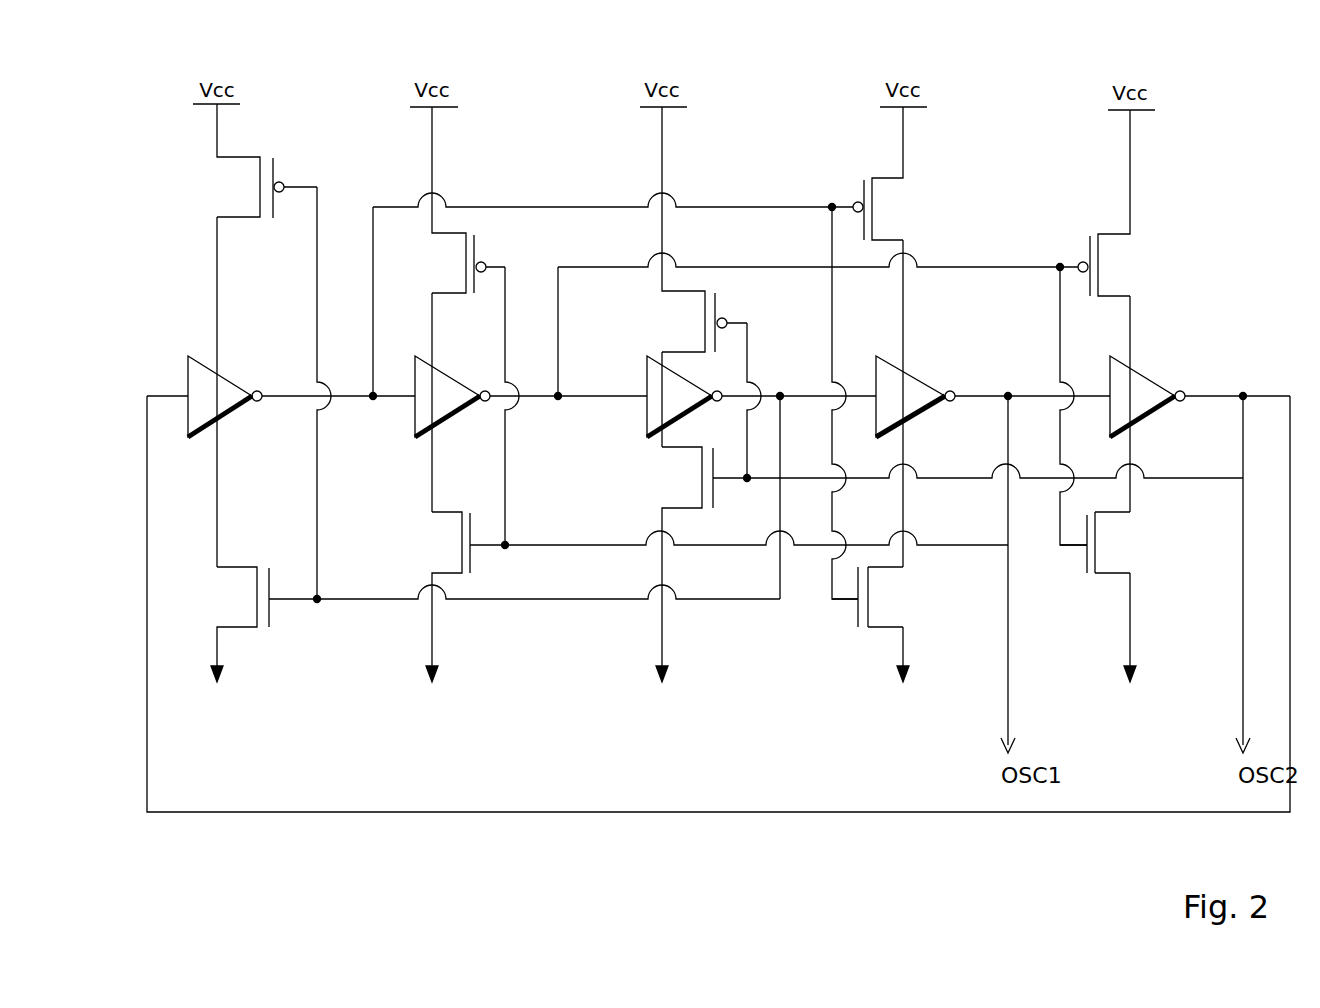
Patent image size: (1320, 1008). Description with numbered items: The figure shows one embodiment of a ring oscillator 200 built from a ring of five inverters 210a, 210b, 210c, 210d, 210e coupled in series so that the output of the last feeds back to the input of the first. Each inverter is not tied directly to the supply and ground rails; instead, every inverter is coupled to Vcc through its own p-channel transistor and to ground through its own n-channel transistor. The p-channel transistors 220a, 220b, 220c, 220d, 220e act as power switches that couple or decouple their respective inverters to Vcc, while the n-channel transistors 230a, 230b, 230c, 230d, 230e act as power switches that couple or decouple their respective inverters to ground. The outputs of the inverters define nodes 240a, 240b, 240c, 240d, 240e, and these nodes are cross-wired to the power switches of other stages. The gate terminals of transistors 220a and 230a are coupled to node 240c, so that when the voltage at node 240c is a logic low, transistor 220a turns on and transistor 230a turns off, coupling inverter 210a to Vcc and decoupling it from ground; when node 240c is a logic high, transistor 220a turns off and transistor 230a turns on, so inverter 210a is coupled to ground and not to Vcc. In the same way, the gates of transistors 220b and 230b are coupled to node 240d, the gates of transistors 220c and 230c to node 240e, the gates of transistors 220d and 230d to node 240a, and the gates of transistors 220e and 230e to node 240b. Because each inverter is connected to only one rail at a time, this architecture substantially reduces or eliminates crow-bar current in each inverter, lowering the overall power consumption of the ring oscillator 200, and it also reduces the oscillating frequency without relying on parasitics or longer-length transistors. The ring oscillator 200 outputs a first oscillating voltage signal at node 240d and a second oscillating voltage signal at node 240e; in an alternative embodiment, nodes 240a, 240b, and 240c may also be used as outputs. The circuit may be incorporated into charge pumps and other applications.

The ring oscillator 200 is at (1250, 120).
The inverter 210a is at (232, 406).
The inverter 210b is at (459, 406).
The inverter 210c is at (692, 406).
The inverter 210d is at (922, 406).
The inverter 210e is at (1155, 406).
The p-channel transistor 220a is at (255, 161).
The p-channel transistor 220b is at (455, 200).
The p-channel transistor 220c is at (693, 229).
The p-channel transistor 220d is at (900, 173).
The p-channel transistor 220e is at (1127, 203).
The n-channel transistor 230a is at (257, 624).
The n-channel transistor 230b is at (451, 597).
The n-channel transistor 230c is at (696, 564).
The n-channel transistor 230d is at (883, 624).
The n-channel transistor 230e is at (1112, 597).
The node 240a is at (352, 375).
The node 240b is at (604, 375).
The node 240c is at (780, 394).
The node 240d is at (1008, 394).
The node 240e is at (1248, 394).